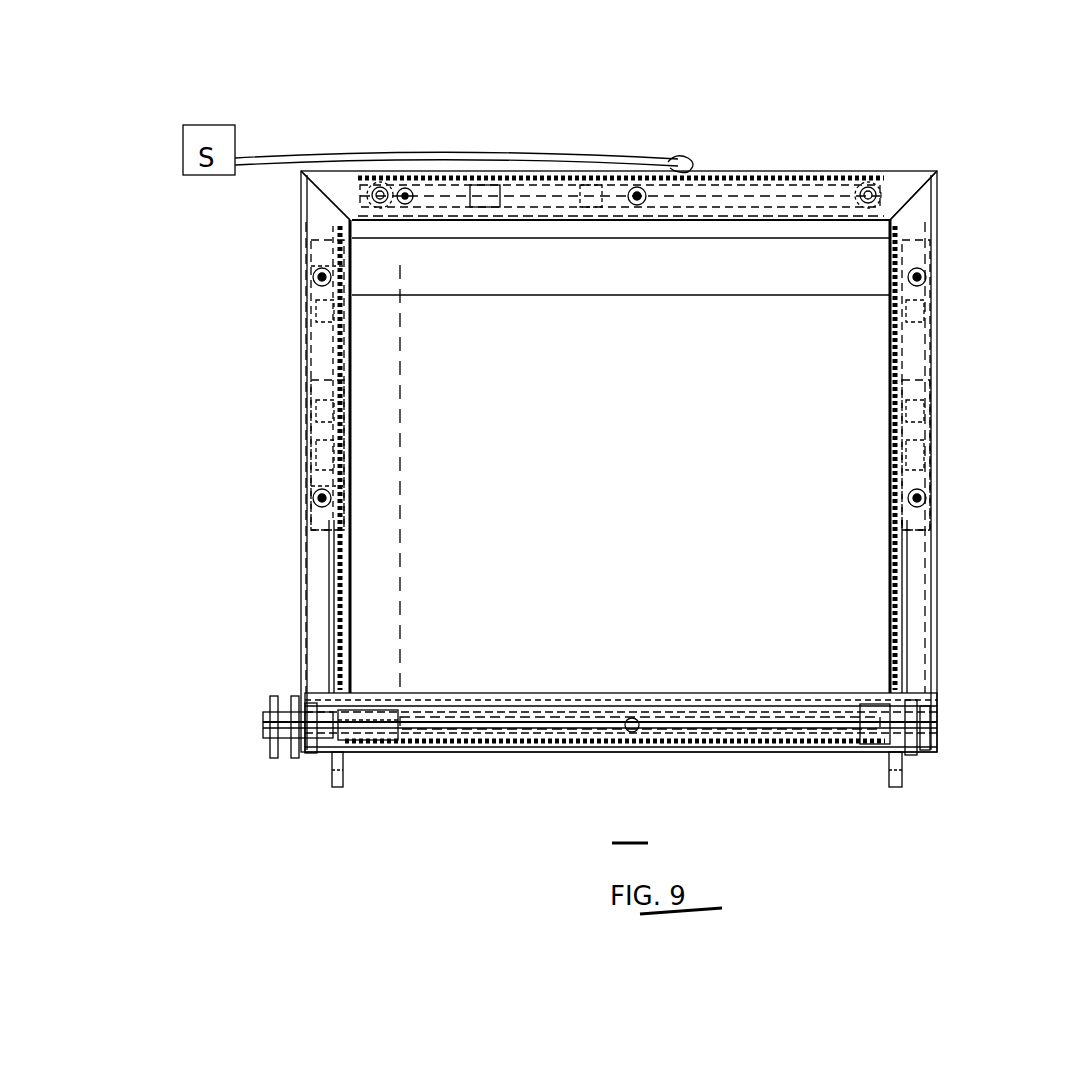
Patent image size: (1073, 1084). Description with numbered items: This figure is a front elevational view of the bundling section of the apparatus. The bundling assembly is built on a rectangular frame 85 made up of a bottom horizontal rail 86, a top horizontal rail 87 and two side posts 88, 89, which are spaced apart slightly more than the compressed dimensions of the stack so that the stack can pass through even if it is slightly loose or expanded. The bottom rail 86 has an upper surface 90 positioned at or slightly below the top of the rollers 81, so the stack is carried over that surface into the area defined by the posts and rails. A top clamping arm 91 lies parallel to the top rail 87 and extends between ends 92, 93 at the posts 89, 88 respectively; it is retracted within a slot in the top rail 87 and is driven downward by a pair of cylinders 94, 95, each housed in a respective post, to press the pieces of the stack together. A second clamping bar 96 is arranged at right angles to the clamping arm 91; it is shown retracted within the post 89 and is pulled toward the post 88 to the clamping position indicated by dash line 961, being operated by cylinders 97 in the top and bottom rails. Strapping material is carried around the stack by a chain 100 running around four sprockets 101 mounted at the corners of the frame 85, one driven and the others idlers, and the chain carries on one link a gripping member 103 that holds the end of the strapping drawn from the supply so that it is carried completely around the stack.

The rollers 81 is at (403, 755).
The rectangular frame 85 is at (962, 372).
The bottom horizontal rail 86 is at (570, 754).
The top horizontal rail 87 is at (716, 200).
The side post 88 is at (932, 556).
The side post 89 is at (345, 530).
The upper surface 90 is at (650, 690).
The top clamping arm 91 is at (615, 292).
The end of clamping arm 92 is at (320, 250).
The end of clamping arm 93 is at (920, 252).
The cylinder 94 is at (316, 390).
The cylinder 95 is at (920, 405).
The second clamping bar 96 is at (300, 190).
The clamping position 961 is at (404, 400).
The cylinders 97 is at (520, 140).
The chain 100 is at (403, 185).
The sprockets 101 is at (392, 206).
The gripping member 103 is at (680, 158).